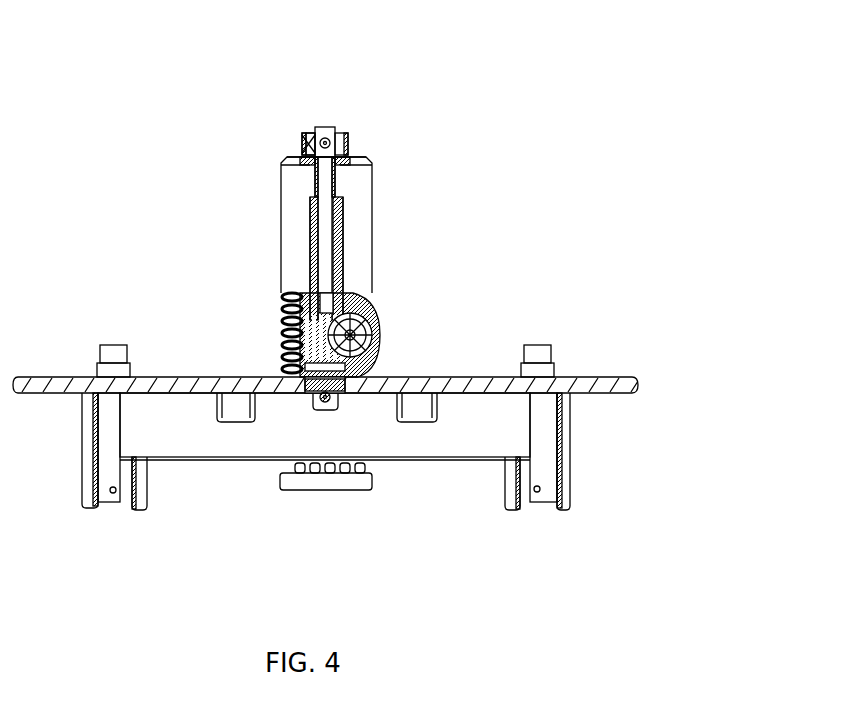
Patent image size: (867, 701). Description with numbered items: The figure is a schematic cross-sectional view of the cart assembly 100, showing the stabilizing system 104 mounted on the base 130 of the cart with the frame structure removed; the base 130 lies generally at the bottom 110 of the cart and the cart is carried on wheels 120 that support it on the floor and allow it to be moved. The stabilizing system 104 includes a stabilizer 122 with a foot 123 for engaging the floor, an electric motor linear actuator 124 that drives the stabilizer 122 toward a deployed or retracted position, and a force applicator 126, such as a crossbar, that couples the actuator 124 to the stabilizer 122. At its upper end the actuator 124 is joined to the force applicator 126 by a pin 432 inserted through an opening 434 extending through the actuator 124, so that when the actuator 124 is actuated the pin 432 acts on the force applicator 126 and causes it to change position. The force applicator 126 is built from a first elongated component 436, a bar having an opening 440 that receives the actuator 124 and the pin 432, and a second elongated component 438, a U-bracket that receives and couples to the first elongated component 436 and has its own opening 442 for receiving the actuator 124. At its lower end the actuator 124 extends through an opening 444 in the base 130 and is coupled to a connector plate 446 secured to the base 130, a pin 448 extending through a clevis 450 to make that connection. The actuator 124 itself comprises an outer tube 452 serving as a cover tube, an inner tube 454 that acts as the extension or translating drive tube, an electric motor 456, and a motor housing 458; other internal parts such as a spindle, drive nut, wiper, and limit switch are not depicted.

The cart assembly 100 is at (685, 70).
The stabilizing system 104 is at (330, 122).
The bottom 110 is at (422, 488).
The wheels 120 is at (88, 503).
The stabilizer 122 is at (362, 230).
The foot 123 is at (322, 492).
The actuator 124 is at (347, 193).
The force applicator 126 is at (347, 165).
The base 130 is at (623, 385).
The pin 432 is at (333, 132).
The opening 434 is at (310, 163).
The first elongated component 436 is at (340, 147).
The second elongated component 438 is at (303, 140).
The opening 440 is at (312, 122).
The opening 442 is at (300, 120).
The opening 444 is at (367, 373).
The connector plate 446 is at (358, 398).
The pin 448 is at (312, 405).
The clevis 450 is at (318, 407).
The outer tube 452 is at (310, 263).
The inner tube 454 is at (312, 175).
The electric motor 456 is at (380, 335).
The motor housing 458 is at (363, 300).